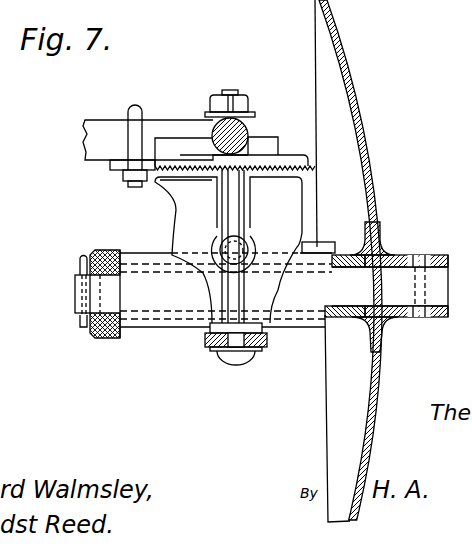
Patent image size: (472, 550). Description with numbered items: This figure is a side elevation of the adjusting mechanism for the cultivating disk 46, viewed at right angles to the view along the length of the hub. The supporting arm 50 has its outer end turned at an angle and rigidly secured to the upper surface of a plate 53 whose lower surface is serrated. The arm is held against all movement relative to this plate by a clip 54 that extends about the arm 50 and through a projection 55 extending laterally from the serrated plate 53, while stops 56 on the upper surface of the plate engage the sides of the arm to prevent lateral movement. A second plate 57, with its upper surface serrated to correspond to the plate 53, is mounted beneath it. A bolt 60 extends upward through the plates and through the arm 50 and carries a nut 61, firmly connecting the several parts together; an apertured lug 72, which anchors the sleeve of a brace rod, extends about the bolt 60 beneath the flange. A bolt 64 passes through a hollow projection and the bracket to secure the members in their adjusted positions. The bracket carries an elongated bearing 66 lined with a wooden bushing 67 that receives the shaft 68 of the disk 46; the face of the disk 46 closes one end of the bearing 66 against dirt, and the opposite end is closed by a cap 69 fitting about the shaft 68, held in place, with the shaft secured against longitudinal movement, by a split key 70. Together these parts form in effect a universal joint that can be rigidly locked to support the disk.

The cultivating disk 46 is at (365, 175).
The supporting arm 50 is at (85, 141).
The serrated plate 53 is at (293, 158).
The clip 54 is at (128, 110).
The projection 55 is at (113, 167).
The stops 56 is at (177, 145).
The second plate 57 is at (182, 185).
The bolt 60 is at (238, 84).
The nut 61 is at (250, 104).
The bolt 64 is at (272, 226).
The elongated bearing 66 is at (333, 320).
The wooden bushing 67 is at (337, 268).
The shaft 68 is at (390, 277).
The cap 69 is at (92, 335).
The split key 70 is at (78, 263).
The apertured lug 72 is at (205, 340).